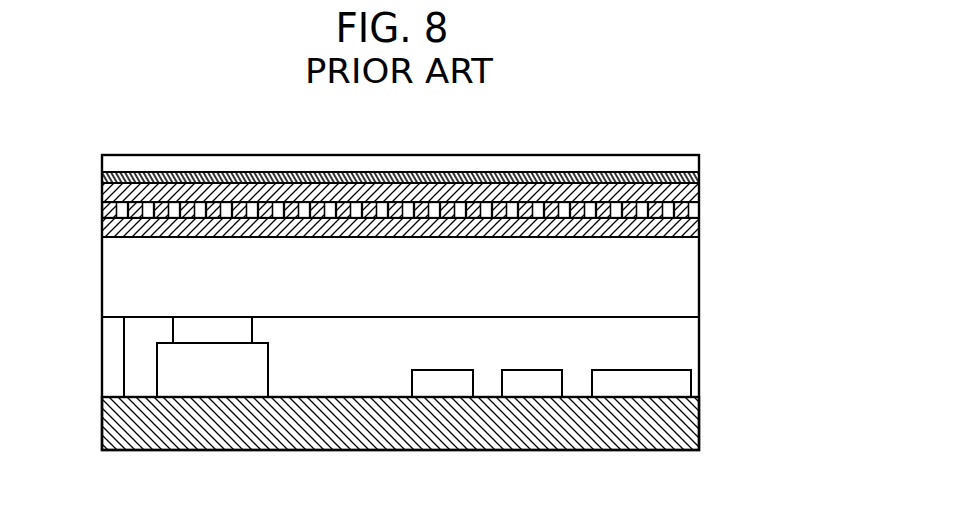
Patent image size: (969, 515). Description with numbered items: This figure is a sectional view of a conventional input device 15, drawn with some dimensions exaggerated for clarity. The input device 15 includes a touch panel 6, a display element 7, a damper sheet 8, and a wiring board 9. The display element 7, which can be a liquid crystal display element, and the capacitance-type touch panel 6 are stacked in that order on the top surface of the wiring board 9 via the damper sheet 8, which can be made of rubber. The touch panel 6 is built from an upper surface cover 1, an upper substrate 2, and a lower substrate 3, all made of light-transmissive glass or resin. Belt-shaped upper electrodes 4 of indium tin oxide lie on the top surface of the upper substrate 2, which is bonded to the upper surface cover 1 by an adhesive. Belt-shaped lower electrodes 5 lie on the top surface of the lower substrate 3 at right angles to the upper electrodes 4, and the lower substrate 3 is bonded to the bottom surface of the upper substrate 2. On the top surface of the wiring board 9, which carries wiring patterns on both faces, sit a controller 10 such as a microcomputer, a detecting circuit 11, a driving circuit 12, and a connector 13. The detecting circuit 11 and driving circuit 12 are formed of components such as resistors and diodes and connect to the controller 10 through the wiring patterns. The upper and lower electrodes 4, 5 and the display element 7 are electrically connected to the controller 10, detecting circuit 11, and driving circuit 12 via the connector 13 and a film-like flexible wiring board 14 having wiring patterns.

The upper surface cover 1 is at (690, 161).
The upper substrate 2 is at (700, 190).
The lower substrate 3 is at (690, 228).
The upper electrodes 4 is at (700, 175).
The lower electrodes 5 is at (700, 210).
The touch panel 6 is at (478, 179).
The display element 7 is at (689, 298).
The damper sheet 8 is at (113, 378).
The wiring board 9 is at (690, 423).
The controller 10 is at (615, 380).
The detecting circuit 11 is at (528, 380).
The driving circuit 12 is at (440, 380).
The connector 13 is at (232, 377).
The flexible wiring board 14 is at (204, 332).
The input device 15 is at (575, 135).